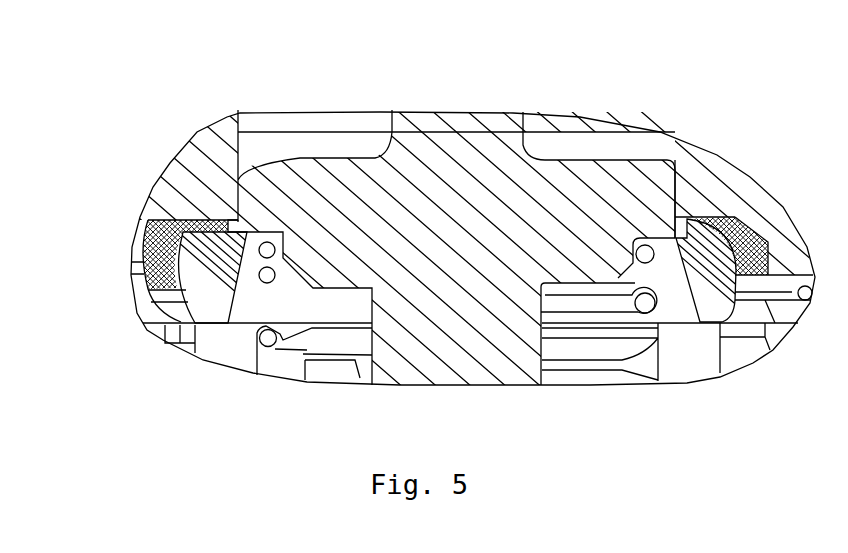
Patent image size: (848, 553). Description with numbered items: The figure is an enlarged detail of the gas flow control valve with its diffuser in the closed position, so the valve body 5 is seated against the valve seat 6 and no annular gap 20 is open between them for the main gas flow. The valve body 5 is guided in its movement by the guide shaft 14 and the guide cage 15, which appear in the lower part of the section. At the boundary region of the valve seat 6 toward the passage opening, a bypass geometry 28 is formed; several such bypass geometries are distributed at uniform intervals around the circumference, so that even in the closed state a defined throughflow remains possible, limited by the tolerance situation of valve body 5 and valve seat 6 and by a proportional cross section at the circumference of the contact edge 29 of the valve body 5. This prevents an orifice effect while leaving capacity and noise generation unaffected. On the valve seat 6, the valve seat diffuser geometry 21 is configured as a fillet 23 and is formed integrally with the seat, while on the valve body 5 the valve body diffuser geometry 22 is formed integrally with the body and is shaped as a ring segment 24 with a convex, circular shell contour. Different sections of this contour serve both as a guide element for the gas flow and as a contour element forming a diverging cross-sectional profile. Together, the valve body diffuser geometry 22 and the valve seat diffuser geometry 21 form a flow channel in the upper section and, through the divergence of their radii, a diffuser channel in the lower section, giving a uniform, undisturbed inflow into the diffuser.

The valve body 5 is at (398, 178).
The valve seat 6 is at (155, 212).
The guide shaft 14 is at (393, 362).
The guide cage 15 is at (215, 347).
The annular gap 20 is at (262, 141).
The valve seat diffuser geometry 21 is at (175, 232).
The valve body diffuser geometry 22 is at (214, 252).
The fillet 23 is at (148, 314).
The ring segment 24 is at (190, 310).
The bypass geometry 28 is at (677, 218).
The contact edge 29 is at (238, 216).